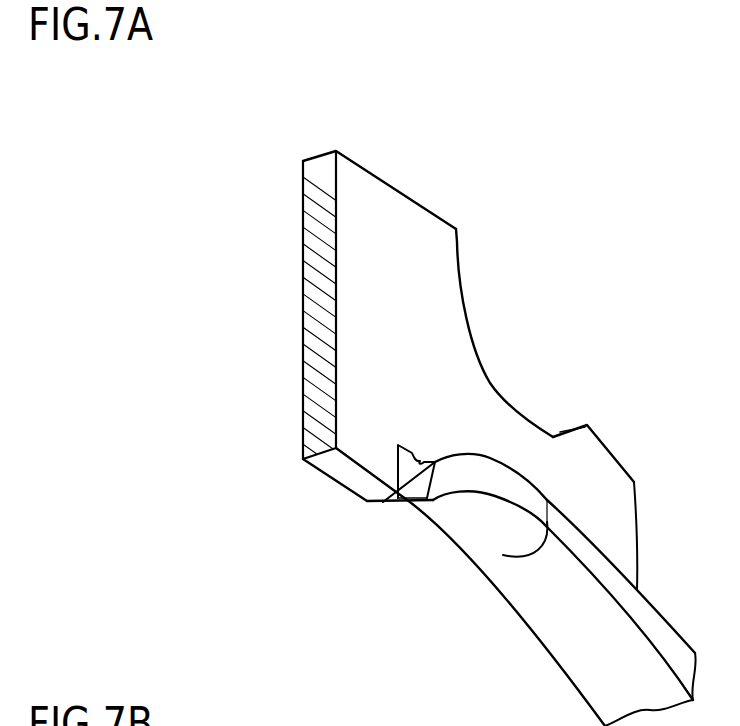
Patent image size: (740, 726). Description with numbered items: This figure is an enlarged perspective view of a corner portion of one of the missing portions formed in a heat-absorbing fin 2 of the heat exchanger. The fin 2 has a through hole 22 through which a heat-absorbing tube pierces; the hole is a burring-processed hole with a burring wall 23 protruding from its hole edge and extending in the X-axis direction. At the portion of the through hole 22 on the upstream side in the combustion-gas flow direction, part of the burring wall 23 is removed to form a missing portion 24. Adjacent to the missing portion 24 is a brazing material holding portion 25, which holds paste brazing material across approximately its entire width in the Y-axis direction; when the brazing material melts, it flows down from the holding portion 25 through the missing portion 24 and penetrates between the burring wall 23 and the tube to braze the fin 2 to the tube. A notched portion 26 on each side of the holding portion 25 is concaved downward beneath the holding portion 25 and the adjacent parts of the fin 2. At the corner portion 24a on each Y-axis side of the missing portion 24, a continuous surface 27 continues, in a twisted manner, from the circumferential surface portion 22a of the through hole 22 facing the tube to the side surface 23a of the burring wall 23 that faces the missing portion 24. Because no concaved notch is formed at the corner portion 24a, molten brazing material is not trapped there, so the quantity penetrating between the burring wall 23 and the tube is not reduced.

The heat-absorbing fin 2 is at (501, 181).
The through hole 22 is at (547, 522).
The circumferential surface portion 22a is at (343, 468).
The burring wall 23 is at (565, 530).
The side surface 23a is at (463, 467).
The missing portion 24 is at (380, 462).
The corner portion 24a is at (423, 479).
The brazing material holding portion 25 is at (401, 190).
The notched portion 26 is at (468, 318).
The continuous surface 27 is at (420, 492).